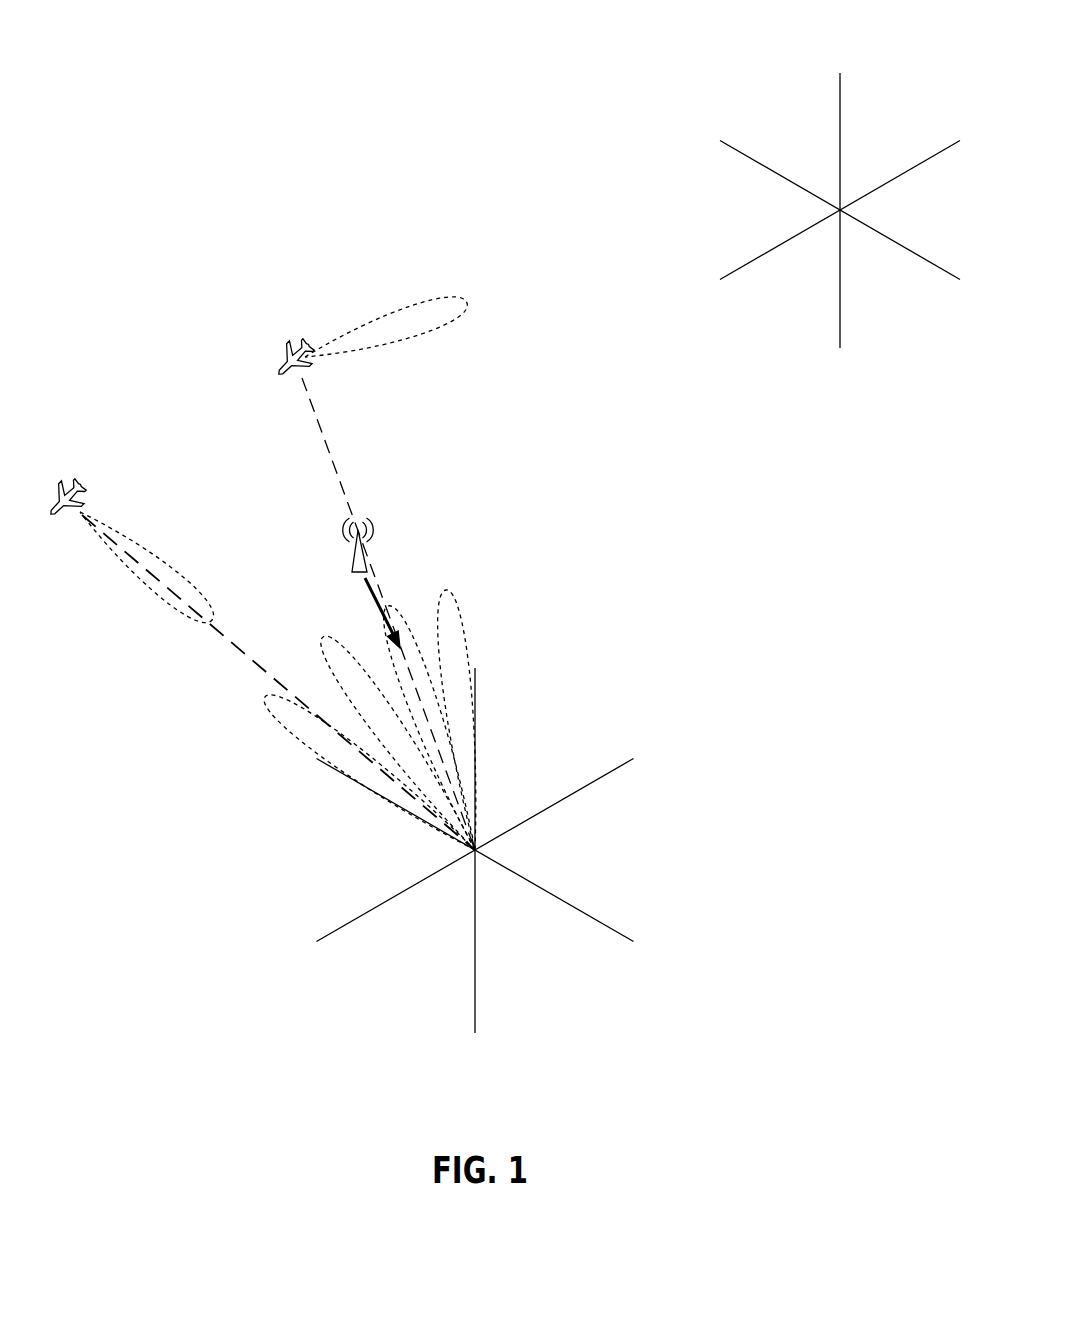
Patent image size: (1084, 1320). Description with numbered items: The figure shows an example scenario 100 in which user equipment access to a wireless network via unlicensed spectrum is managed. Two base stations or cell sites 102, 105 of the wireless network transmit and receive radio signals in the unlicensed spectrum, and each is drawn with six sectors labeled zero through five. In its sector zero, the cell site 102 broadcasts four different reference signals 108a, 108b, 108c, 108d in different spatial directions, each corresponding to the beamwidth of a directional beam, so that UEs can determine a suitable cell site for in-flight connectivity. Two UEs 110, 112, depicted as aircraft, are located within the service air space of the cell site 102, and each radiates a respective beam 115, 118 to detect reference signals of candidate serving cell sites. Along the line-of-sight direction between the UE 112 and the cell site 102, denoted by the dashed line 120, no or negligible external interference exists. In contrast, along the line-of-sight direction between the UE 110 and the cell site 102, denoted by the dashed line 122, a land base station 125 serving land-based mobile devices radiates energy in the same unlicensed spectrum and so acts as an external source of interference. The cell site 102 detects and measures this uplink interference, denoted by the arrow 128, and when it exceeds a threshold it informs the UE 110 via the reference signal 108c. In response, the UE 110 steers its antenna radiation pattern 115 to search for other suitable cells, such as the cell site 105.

The scenario 100 is at (470, 77).
The cell site 102 is at (532, 1022).
The cell site 105 is at (862, 352).
The reference signal 108a is at (295, 733).
The reference signal 108b is at (322, 658).
The reference signal 108c is at (407, 628).
The reference signal 108d is at (460, 613).
The user equipment 110 is at (300, 350).
The user equipment 112 is at (68, 487).
The beam 115 is at (430, 332).
The beam 118 is at (137, 543).
The dashed line 120 is at (230, 638).
The dashed line 122 is at (323, 433).
The land base station 125 is at (385, 525).
The arrow 128 is at (363, 600).